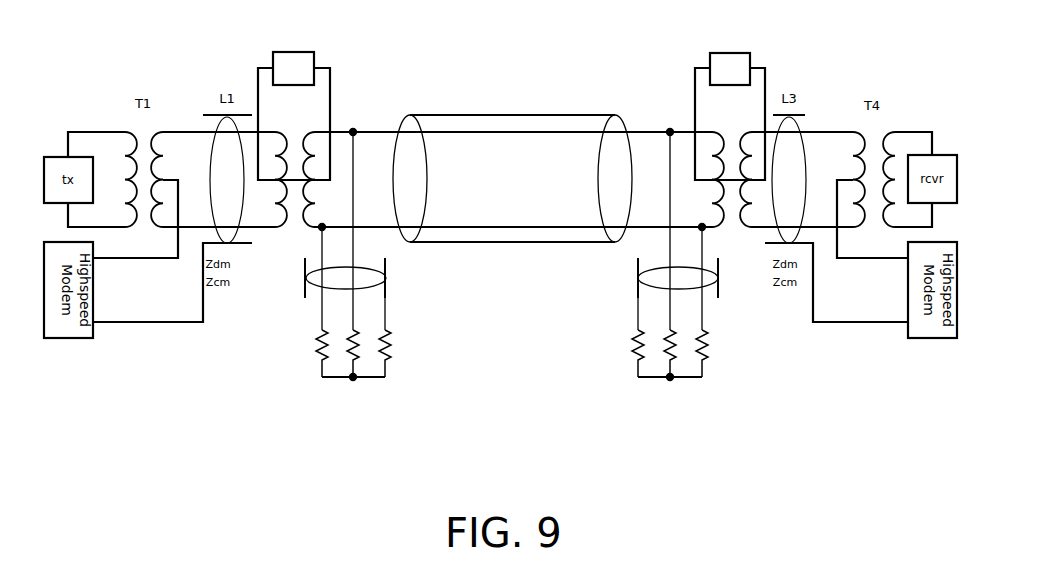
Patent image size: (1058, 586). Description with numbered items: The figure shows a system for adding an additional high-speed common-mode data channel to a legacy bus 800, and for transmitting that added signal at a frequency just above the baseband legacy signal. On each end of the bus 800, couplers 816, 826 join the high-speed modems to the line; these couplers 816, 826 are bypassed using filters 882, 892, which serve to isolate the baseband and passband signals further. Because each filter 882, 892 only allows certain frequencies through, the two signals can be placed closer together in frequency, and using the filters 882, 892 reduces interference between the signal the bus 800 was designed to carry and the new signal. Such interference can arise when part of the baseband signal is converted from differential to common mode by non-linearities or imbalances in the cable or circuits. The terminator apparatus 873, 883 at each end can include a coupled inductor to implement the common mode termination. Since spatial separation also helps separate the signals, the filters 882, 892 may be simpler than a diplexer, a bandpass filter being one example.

The bus 800 is at (647, 130).
The coupler 816 is at (293, 218).
The coupler 826 is at (728, 217).
The terminator apparatus 873 is at (362, 288).
The terminator apparatus 883 is at (661, 288).
The filter 882 is at (293, 52).
The filter 892 is at (722, 53).